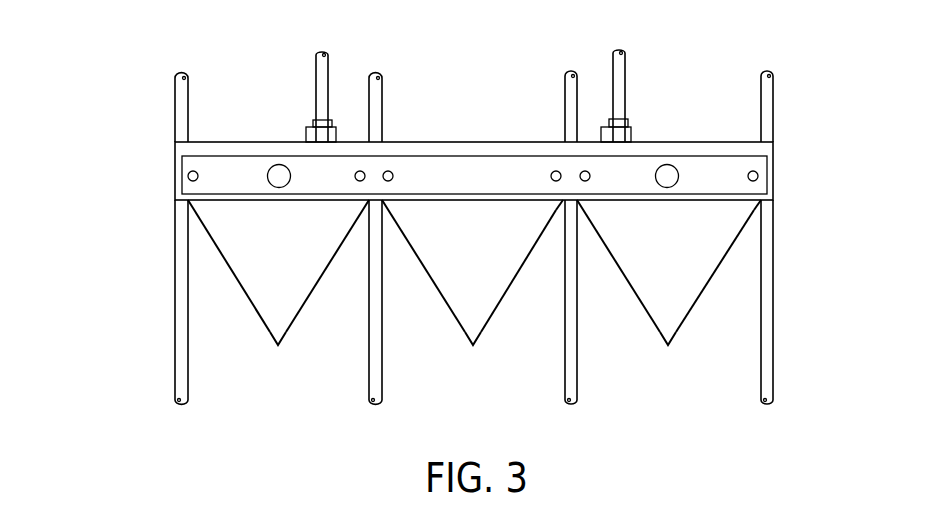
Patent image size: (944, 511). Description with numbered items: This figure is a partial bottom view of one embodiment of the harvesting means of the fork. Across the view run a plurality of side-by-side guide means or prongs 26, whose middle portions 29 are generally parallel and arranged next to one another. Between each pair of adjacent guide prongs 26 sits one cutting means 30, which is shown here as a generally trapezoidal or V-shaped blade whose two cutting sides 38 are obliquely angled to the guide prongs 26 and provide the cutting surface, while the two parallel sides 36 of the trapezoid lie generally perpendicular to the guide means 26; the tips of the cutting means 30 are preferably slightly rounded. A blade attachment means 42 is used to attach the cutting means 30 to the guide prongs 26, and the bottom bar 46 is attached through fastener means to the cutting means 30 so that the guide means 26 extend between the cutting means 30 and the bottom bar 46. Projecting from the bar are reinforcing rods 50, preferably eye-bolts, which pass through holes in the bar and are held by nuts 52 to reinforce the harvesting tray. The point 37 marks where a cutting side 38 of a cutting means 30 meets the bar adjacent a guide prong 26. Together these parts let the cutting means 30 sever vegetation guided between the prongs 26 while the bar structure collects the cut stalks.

The guide means or prongs 26 is at (178, 108).
The middle portions 29 is at (178, 251).
The cutting means 30 is at (474, 251).
The parallel sides 36 is at (260, 141).
The attachment point 37 is at (558, 213).
The cutting sides 38 is at (246, 303).
The blade attachment means 42 is at (148, 166).
The bottom bar 46 is at (712, 172).
The reinforcing rods 50 is at (318, 72).
The nuts 52 is at (333, 137).